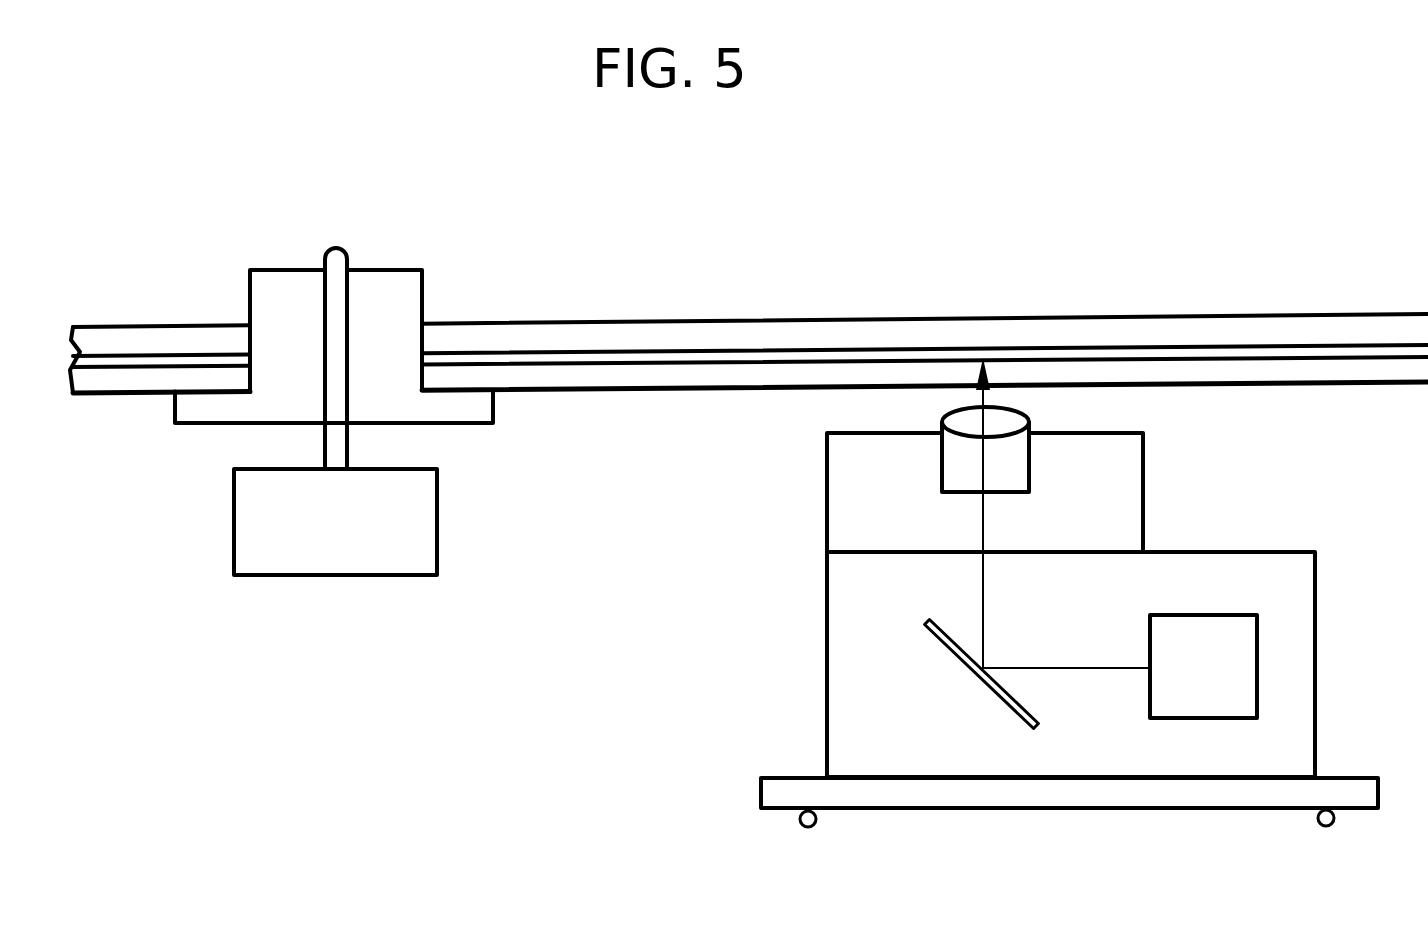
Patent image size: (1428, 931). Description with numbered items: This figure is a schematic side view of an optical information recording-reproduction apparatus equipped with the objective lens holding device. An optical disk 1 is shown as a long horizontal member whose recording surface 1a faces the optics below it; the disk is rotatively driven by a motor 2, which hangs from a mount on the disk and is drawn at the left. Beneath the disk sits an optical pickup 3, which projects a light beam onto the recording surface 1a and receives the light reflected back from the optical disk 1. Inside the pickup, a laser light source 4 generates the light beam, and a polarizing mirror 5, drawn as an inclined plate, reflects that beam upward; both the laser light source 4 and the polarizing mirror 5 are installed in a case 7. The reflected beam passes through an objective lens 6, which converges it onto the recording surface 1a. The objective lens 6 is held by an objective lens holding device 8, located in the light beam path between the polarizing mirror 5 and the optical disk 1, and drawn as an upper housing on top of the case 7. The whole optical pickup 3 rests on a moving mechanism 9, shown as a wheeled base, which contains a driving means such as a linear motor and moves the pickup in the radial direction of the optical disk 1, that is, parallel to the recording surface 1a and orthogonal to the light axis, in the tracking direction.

The optical disk 1 is at (749, 296).
The recording surface 1a is at (923, 355).
The motor 2 is at (420, 523).
The optical pickup 3 is at (1041, 592).
The laser light source 4 is at (1238, 660).
The polarizing mirror 5 is at (982, 677).
The objective lens 6 is at (965, 417).
The case 7 is at (1315, 622).
The objective lens holding device 8 is at (1143, 486).
The moving mechanism 9 is at (770, 793).